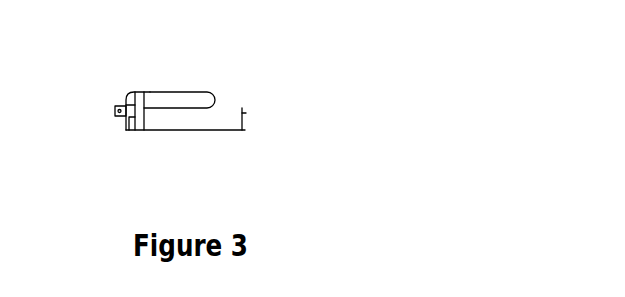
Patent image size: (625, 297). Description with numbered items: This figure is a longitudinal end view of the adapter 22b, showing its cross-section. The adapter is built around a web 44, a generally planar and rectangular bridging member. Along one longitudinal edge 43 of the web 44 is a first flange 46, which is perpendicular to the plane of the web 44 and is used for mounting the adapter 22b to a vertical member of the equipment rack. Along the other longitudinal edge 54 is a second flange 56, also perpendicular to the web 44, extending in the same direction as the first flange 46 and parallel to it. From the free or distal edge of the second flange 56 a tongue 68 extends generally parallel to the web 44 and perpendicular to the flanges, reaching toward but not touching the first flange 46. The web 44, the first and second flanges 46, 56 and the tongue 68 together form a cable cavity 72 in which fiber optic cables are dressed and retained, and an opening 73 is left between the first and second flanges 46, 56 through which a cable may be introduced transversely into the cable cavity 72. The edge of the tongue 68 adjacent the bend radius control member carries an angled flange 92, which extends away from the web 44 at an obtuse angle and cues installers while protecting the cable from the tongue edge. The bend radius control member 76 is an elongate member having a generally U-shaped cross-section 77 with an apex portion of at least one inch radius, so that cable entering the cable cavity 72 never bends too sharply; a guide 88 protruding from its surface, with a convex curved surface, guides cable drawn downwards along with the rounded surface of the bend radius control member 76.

The adapter 22b is at (228, 147).
The angled flange 92 is at (187, 93).
The second guide 88 is at (115, 113).
The second flange 56 is at (136, 131).
The other longitudinal edge 54 is at (128, 131).
The cable cavity 72 is at (165, 112).
The U-shaped cross-section 77 is at (132, 92).
The bend radius control member 76 is at (125, 98).
The tongue 68 is at (218, 108).
The opening 73 is at (228, 108).
The first flange 46 is at (246, 113).
The longitudinal edge 43 is at (245, 130).
The web 44 is at (192, 131).